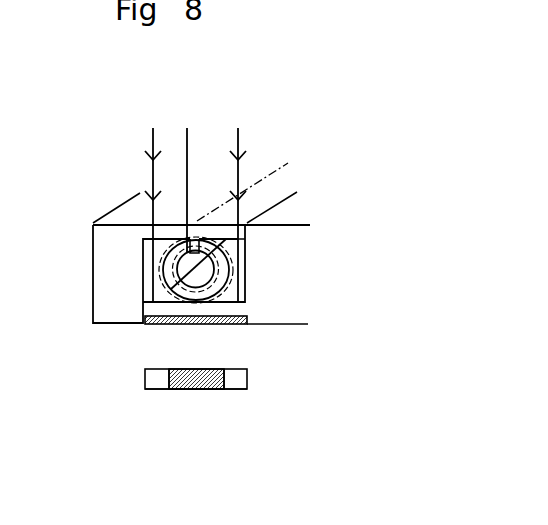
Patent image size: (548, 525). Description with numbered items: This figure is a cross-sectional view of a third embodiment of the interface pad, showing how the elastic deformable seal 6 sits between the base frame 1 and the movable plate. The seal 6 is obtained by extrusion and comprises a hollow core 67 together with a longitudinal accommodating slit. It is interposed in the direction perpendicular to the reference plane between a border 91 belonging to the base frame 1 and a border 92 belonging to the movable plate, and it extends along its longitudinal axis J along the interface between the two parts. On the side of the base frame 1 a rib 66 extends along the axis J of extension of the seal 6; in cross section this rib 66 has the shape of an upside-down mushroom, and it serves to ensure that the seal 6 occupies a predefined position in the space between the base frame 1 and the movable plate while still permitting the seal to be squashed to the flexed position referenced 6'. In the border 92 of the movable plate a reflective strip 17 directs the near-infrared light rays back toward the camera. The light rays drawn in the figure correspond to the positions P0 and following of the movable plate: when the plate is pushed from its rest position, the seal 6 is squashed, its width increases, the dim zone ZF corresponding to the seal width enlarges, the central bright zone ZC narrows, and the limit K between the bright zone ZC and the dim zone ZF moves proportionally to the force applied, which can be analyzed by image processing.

The base frame 1 is at (127, 280).
The elastic deformable seal 6 is at (243, 238).
The flexed position of the elastic deformable seal 6' is at (294, 240).
The reflective strip 17 is at (232, 325).
The rib 66 is at (194, 253).
The hollow core 67 is at (173, 288).
The border of the base frame 91 is at (224, 236).
The border of the movable plate 92 is at (155, 310).
The longitudinal axis J is at (247, 175).
The limit K is at (167, 387).
The bright zone ZC is at (158, 382).
The dim zone ZF is at (197, 386).
The rest position P0 is at (255, 216).